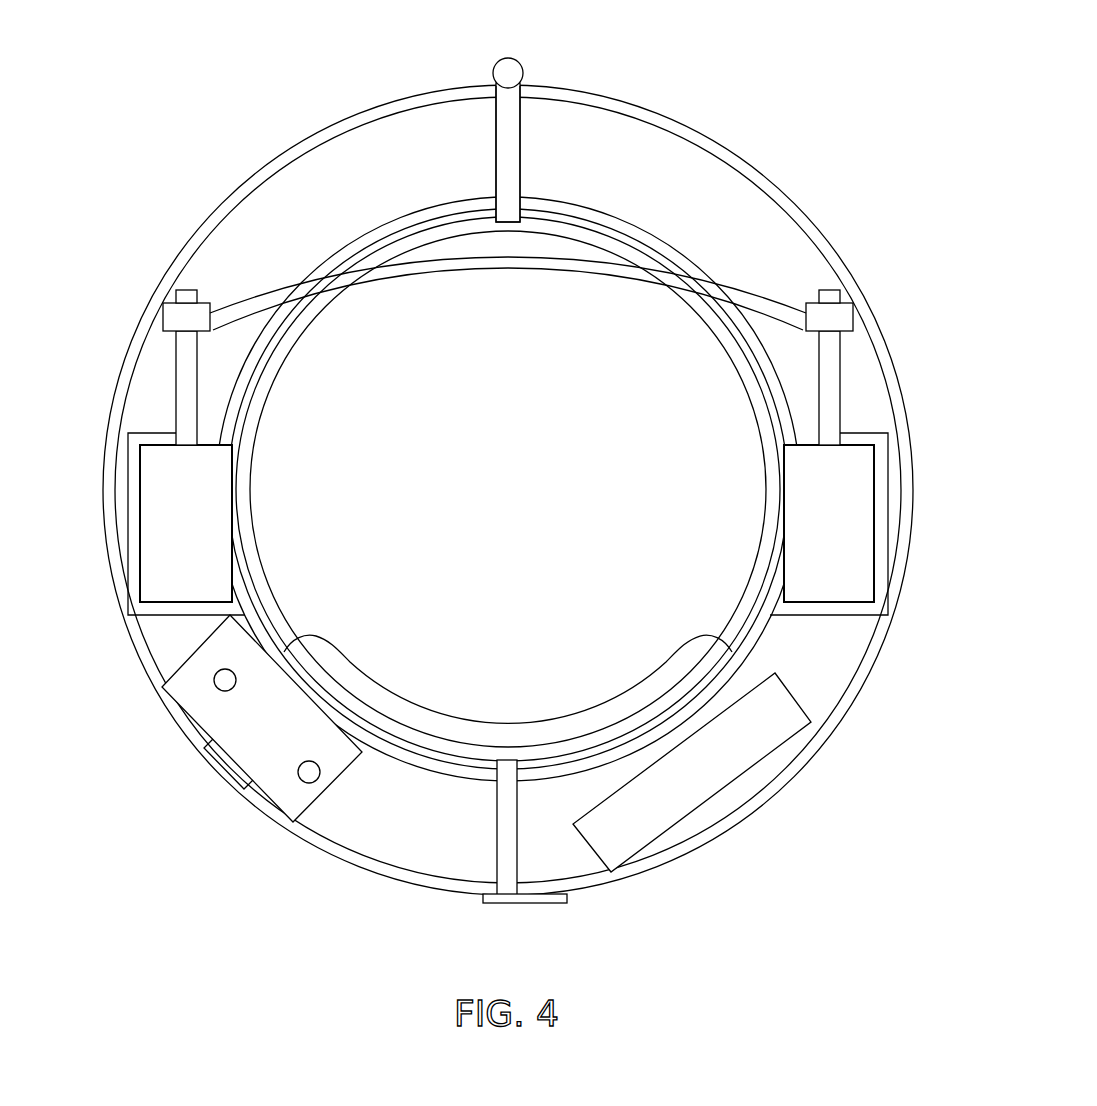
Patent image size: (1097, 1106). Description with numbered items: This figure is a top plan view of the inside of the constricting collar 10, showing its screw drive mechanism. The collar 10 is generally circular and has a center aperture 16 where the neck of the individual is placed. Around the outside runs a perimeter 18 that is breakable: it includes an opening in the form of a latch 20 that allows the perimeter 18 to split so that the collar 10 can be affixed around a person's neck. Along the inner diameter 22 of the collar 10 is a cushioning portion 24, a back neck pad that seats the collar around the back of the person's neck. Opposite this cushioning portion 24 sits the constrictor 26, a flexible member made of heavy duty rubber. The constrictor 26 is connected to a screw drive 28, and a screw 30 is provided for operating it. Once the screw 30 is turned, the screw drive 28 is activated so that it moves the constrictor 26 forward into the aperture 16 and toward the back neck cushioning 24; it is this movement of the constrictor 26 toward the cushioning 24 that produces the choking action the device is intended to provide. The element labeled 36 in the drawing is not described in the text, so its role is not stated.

The collar 10 is at (703, 66).
The center aperture 16 is at (516, 481).
The perimeter 18 is at (900, 390).
The latch 20 is at (527, 903).
The inner diameter 22 is at (250, 556).
The cushioning portion 24 is at (452, 723).
The constrictor 26 is at (541, 262).
The screw drive 28 is at (155, 500).
The screw 30 is at (217, 773).
The mounting block 36 is at (663, 810).